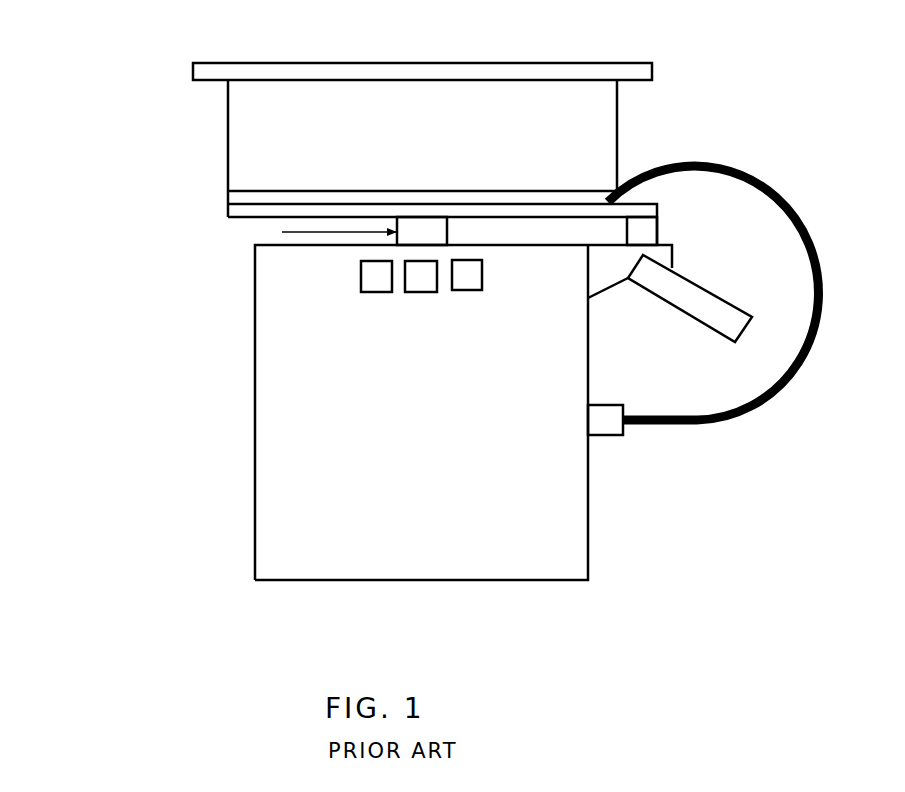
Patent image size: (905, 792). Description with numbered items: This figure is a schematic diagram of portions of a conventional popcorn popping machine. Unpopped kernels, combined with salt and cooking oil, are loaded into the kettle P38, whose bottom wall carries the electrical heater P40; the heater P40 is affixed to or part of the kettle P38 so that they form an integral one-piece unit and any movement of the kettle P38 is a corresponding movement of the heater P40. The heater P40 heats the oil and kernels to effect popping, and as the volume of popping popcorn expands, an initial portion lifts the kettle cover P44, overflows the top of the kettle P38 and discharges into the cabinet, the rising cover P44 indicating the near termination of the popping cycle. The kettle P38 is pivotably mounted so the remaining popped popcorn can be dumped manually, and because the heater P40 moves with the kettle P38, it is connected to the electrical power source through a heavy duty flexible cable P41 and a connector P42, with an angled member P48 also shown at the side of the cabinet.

The kettle cover P44 is at (193, 73).
The kettle P38 is at (228, 136).
The heater P40 is at (228, 199).
The cable P41 is at (729, 160).
The angled member P48 is at (722, 292).
The connector P42 is at (605, 435).